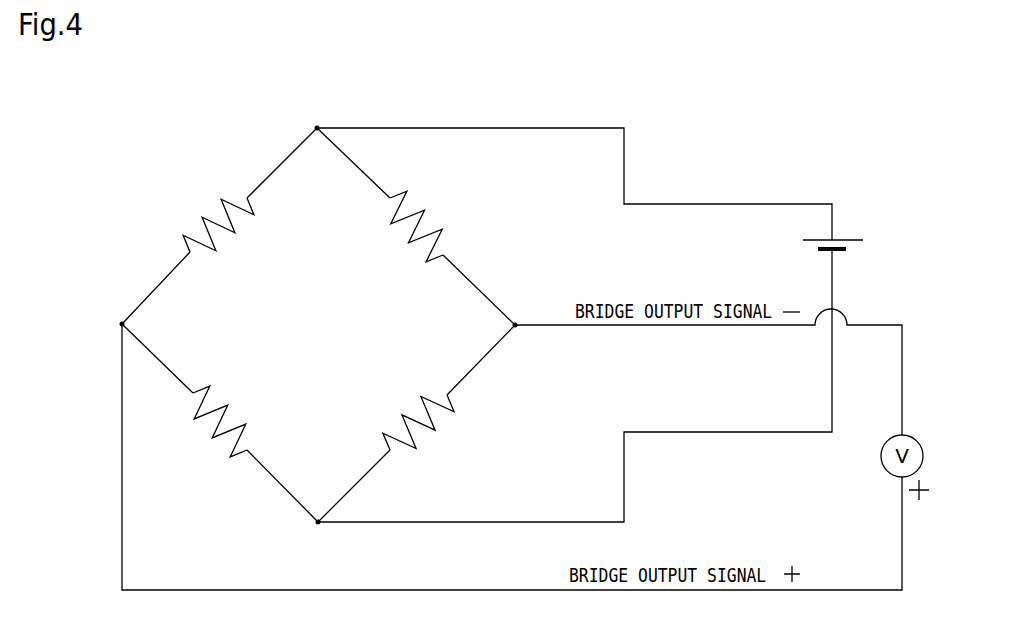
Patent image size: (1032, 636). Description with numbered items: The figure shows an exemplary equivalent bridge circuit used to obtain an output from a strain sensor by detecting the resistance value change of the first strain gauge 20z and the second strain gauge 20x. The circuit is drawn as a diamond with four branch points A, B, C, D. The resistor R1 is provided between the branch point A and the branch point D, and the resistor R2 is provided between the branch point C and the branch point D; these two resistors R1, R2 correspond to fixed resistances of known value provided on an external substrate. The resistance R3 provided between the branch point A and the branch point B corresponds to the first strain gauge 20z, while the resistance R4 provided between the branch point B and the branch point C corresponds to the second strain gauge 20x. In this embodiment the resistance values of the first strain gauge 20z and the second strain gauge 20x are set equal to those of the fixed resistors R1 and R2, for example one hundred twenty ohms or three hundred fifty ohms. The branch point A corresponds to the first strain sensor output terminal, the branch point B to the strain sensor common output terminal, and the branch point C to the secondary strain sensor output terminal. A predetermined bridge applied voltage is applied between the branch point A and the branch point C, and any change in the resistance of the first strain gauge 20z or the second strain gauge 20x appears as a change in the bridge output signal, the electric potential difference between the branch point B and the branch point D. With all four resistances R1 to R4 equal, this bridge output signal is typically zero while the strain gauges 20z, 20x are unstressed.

The fixed resistor R1 is at (215, 215).
The fixed resistor R2 is at (216, 426).
The resistance R3 is at (459, 226).
The resistance R4 is at (455, 427).
The first strain gauge 20z is at (459, 226).
The second strain gauge 20x is at (455, 427).
The branch point A is at (317, 111).
The branch point B is at (525, 309).
The branch point C is at (319, 538).
The branch point D is at (113, 308).